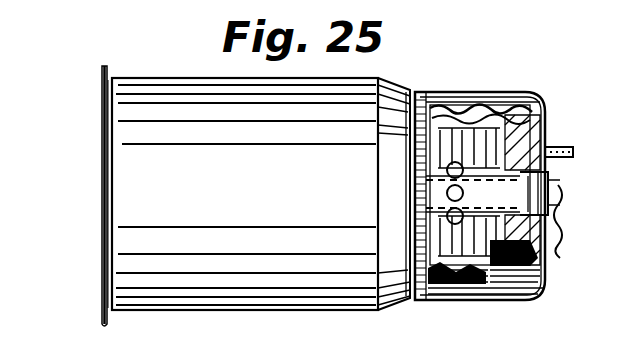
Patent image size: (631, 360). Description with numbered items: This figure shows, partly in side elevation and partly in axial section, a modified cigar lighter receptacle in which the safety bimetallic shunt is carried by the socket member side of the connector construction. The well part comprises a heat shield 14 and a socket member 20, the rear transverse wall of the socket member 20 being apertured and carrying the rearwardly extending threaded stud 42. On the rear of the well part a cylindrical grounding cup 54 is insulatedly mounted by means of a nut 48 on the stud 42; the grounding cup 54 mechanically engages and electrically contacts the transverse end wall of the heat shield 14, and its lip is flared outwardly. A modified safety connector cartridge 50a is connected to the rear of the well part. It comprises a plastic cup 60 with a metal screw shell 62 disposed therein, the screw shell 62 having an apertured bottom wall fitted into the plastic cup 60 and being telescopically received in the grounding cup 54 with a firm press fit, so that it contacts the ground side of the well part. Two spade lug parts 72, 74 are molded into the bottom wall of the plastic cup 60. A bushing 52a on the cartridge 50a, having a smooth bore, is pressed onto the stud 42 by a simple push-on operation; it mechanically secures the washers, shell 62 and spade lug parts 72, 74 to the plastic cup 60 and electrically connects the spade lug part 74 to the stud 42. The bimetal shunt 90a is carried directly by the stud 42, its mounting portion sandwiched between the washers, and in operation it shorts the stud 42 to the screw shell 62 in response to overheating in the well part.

The heat shield 14 is at (261, 194).
The socket member 20 is at (106, 178).
The stud 42 is at (560, 193).
The nut 48 is at (430, 190).
The safety connector cartridge 50a is at (475, 194).
The bushing 52a is at (483, 300).
The grounding cup 54 is at (441, 92).
The plastic cup 60 is at (535, 95).
The screw shell 62 is at (470, 92).
The spade lug part 72 is at (562, 147).
The spade lug part 74 is at (560, 252).
The bimetal shunt 90a is at (519, 300).